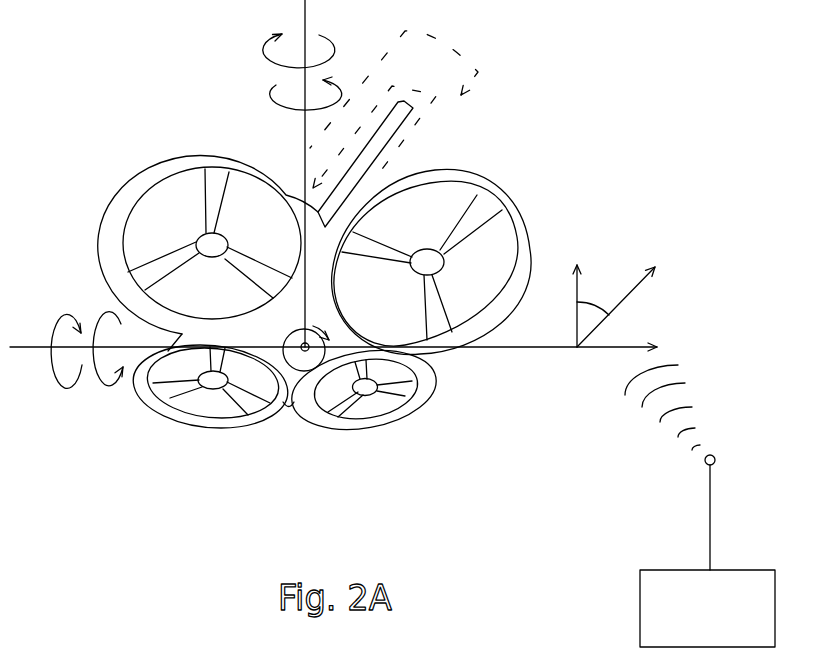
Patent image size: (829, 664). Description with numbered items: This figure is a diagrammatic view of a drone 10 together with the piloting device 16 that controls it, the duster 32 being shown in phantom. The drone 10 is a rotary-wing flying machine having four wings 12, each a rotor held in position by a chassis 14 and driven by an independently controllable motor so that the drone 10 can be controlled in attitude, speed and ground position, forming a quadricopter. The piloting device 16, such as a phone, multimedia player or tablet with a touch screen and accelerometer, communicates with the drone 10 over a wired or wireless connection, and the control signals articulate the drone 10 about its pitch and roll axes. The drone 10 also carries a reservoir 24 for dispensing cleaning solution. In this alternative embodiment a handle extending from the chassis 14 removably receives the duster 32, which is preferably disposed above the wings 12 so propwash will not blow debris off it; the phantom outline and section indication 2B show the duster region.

The drone 10 is at (462, 360).
The rotary wing 12 is at (213, 189).
The chassis 14 is at (112, 224).
The piloting device 16 is at (640, 603).
The reservoir 24 is at (297, 373).
The duster 32 is at (400, 138).
The section line for FIG. 2B is at (448, 43).